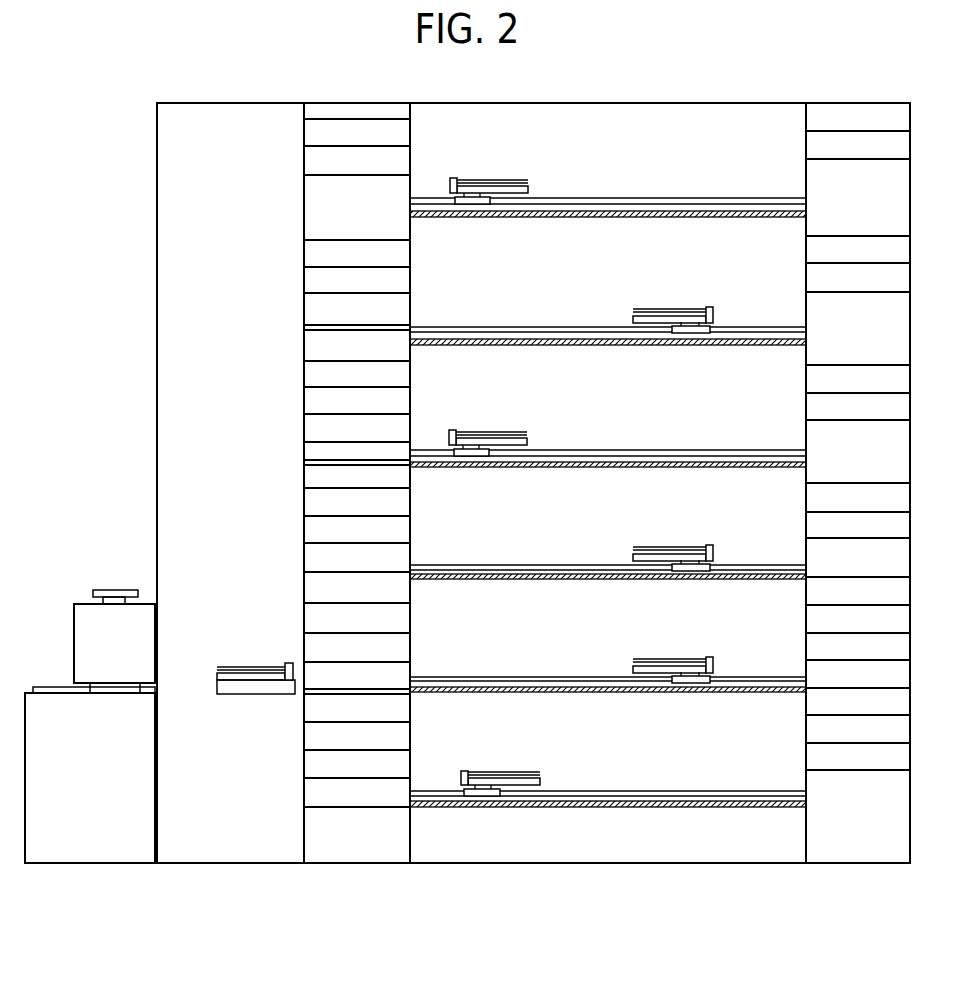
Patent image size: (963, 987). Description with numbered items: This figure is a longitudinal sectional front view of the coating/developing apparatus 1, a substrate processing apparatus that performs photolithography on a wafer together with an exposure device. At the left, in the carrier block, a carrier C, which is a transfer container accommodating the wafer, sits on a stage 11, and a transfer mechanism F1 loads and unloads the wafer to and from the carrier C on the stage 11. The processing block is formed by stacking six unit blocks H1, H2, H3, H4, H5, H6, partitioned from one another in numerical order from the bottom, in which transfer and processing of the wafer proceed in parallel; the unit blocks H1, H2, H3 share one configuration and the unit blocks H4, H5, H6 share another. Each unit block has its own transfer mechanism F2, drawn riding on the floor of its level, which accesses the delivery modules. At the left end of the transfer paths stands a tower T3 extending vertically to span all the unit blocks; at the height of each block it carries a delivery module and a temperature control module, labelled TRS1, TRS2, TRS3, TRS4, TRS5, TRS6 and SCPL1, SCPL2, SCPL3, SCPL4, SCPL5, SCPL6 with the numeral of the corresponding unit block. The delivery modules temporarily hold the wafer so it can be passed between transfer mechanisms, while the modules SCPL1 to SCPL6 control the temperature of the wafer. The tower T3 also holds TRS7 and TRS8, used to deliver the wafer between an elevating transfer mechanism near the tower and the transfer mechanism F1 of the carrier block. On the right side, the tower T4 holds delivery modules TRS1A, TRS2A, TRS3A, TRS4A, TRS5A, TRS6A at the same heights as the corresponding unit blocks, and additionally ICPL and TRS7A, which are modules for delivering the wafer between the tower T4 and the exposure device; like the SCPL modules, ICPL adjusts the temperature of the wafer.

The coating/developing apparatus 1 is at (565, 885).
The stage 11 is at (113, 689).
The carrier C is at (74, 652).
The transfer mechanism F1 is at (240, 724).
The transfer mechanism F2 is at (454, 178).
The tower T3 is at (357, 103).
The tower T4 is at (858, 103).
The unit block H1 is at (608, 769).
The unit block H2 is at (608, 655).
The unit block H3 is at (608, 541).
The unit block H4 is at (608, 429).
The unit block H5 is at (608, 303).
The unit block H6 is at (608, 181).
The delivery module TRS1 is at (356, 736).
The delivery module TRS2 is at (356, 648).
The delivery module TRS3 is at (356, 502).
The delivery module TRS4 is at (356, 374).
The delivery module TRS5 is at (356, 254).
The delivery module TRS6 is at (356, 133).
The delivery module TRS7 is at (356, 428).
The delivery module TRS8 is at (356, 474).
The temperature control module SCPL1 is at (357, 764).
The temperature control module SCPL2 is at (357, 676).
The temperature control module SCPL3 is at (357, 530).
The temperature control module SCPL4 is at (357, 401).
The temperature control module SCPL5 is at (357, 280).
The temperature control module SCPL6 is at (357, 161).
The delivery module TRS1A is at (857, 729).
The delivery module TRS2A is at (857, 619).
The delivery module TRS3A is at (857, 525).
The delivery module TRS4A is at (857, 407).
The delivery module TRS5A is at (857, 278).
The delivery module TRS6A is at (857, 145).
The delivery module TRS7A is at (857, 674).
The temperature adjusting module ICPL is at (858, 702).